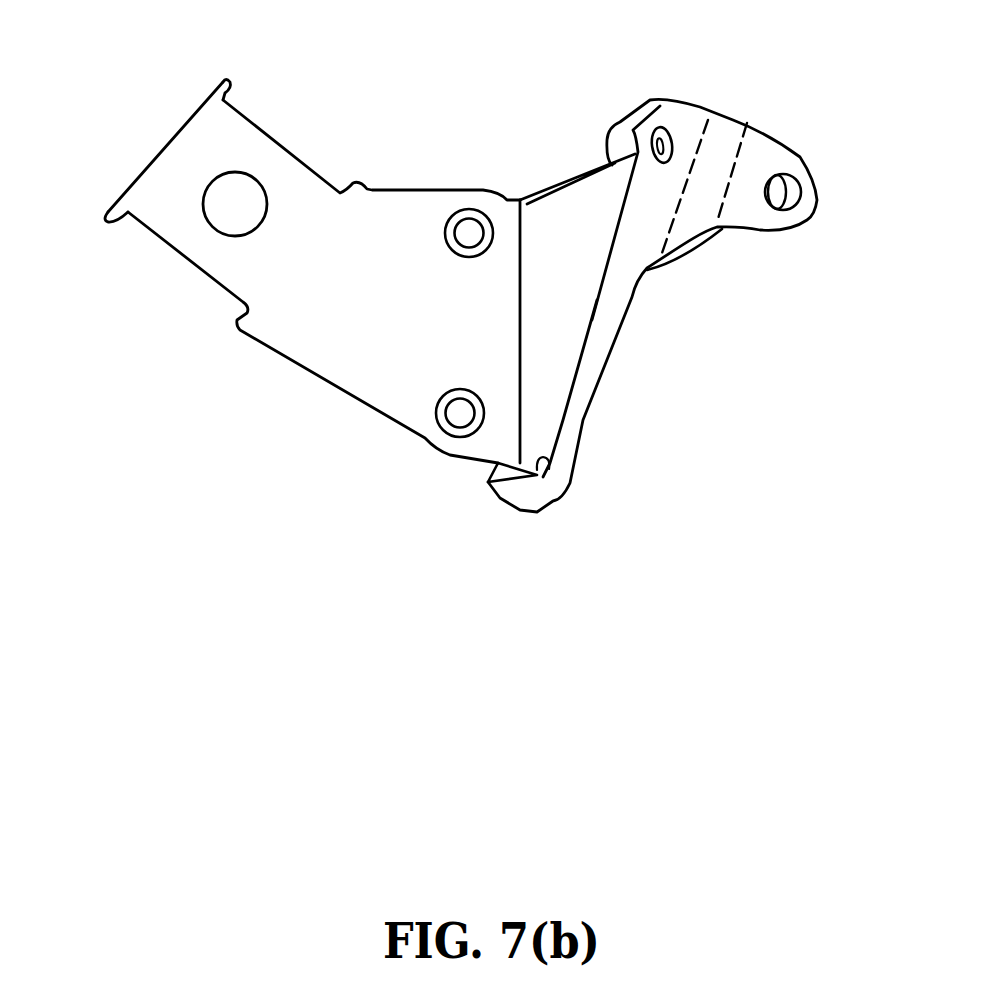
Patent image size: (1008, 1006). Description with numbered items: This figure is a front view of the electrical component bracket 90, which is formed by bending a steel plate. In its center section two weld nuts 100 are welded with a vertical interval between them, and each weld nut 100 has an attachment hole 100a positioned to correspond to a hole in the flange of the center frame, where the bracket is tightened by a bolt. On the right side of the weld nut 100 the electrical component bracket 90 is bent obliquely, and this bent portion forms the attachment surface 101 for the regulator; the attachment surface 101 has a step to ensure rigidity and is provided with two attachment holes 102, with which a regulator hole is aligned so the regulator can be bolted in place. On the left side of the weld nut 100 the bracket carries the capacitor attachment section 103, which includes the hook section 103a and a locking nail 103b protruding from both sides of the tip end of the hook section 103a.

The electrical component bracket 90 is at (784, 113).
The attachment surface 101 is at (650, 198).
The attachment hole 102 is at (667, 137).
The capacitor attachment section 103 is at (184, 252).
The hook section 103a is at (258, 160).
The locking nail 103b is at (225, 80).
The weld nut 100 is at (468, 209).
The attachment hole 100a is at (463, 233).